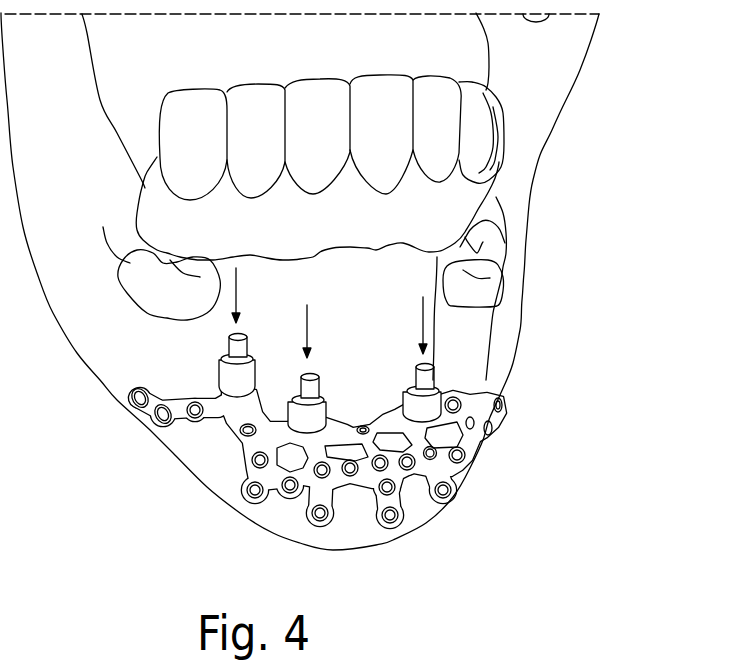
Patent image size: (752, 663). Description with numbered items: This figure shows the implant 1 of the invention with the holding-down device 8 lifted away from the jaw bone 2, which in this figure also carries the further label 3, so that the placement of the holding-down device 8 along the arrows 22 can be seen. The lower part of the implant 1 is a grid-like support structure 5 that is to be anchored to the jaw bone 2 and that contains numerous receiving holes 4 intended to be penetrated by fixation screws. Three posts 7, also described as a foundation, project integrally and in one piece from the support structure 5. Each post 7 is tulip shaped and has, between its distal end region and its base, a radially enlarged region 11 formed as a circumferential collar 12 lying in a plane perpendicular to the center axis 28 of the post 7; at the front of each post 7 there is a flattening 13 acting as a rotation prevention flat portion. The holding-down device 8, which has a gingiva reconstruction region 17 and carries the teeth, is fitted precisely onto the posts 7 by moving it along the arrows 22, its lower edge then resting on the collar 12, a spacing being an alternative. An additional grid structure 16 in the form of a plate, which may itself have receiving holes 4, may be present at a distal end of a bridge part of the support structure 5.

The implant 1 is at (383, 465).
The jaw bone 2 is at (362, 494).
The connecting plate body 3 is at (362, 494).
The receiving holes 4 is at (444, 490).
The support structure 5 is at (470, 420).
The posts 7 is at (232, 333).
The holding-down device 8 is at (525, 182).
The radially enlarged region 11 is at (283, 488).
The collar 12 is at (230, 357).
The flattening 13 is at (226, 355).
The additional grid structure 16 is at (437, 187).
The gingiva reconstruction region 17 is at (477, 123).
The arrows 22 is at (333, 311).
The center axis 28 is at (370, 252).